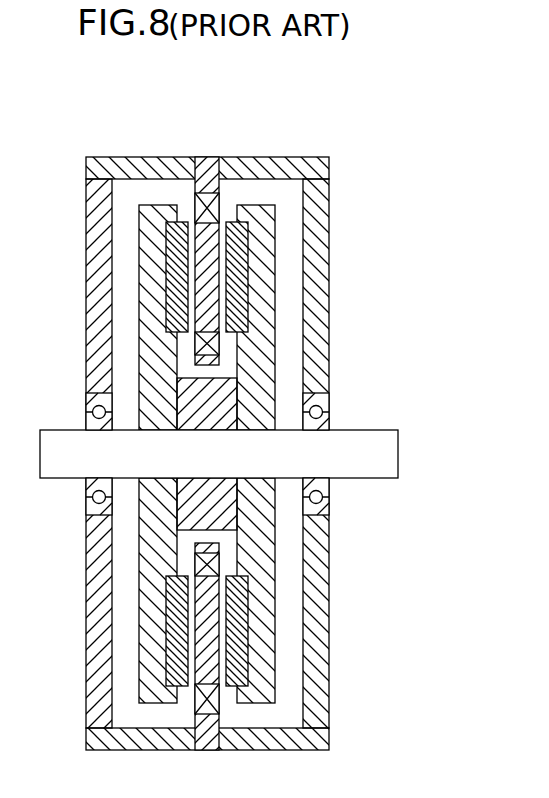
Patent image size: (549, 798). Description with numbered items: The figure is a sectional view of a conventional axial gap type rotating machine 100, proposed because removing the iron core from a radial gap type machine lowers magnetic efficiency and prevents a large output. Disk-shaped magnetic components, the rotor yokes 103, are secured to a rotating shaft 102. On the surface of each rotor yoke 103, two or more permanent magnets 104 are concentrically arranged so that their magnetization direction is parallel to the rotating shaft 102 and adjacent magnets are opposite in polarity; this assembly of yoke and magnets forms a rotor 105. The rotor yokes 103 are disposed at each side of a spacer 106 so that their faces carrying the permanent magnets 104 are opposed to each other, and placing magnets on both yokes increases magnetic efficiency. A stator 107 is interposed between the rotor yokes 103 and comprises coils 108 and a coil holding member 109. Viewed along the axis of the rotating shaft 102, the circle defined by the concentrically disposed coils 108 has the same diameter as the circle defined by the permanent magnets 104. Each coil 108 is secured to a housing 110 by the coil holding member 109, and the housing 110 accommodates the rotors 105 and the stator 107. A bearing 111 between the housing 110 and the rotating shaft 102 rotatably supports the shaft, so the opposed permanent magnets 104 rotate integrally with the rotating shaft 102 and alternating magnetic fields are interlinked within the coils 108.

The axial gap type rotating machine 100 is at (363, 123).
The rotating shaft 102 is at (392, 452).
The rotor yoke 103 is at (272, 254).
The permanent magnet 104 is at (173, 250).
The rotor 105 is at (137, 222).
The spacer 106 is at (183, 390).
The stator 107 is at (208, 157).
The coil 108 is at (215, 343).
The coil holding member 109 is at (205, 294).
The housing 110 is at (318, 293).
The bearing 111 is at (323, 397).